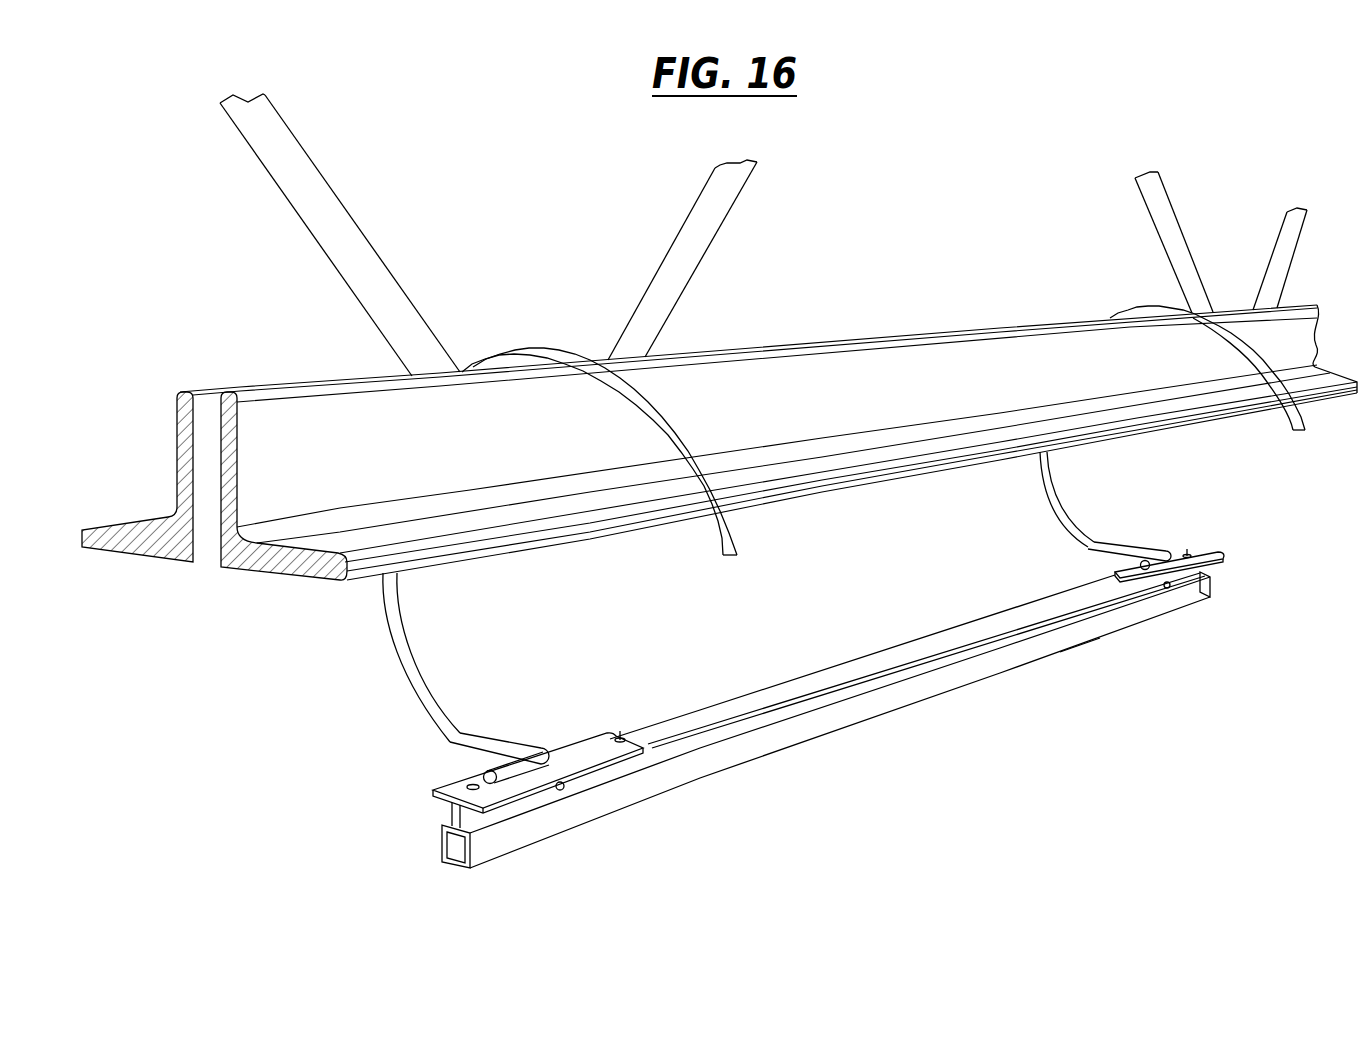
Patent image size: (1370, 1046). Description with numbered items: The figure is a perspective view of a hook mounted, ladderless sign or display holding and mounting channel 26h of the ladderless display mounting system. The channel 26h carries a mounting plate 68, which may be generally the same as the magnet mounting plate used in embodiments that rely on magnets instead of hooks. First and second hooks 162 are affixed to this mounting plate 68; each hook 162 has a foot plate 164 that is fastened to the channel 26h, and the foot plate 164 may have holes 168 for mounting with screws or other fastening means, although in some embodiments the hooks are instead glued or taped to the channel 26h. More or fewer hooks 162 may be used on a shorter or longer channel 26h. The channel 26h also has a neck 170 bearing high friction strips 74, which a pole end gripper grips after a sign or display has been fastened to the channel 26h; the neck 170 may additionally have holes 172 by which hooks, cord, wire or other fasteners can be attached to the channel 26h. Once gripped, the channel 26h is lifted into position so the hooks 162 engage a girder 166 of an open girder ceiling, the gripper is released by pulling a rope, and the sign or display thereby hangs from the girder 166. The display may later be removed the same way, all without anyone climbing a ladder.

The girder 166 is at (287, 393).
The hook 162 is at (410, 672).
The foot plate 164 is at (587, 753).
The hole 168 is at (468, 783).
The high friction strip 74 is at (452, 814).
The mounting plate 68 is at (883, 662).
The neck 170 is at (778, 714).
The hole 172 is at (563, 785).
The sign or display holding and mounting channel 26h is at (1084, 640).